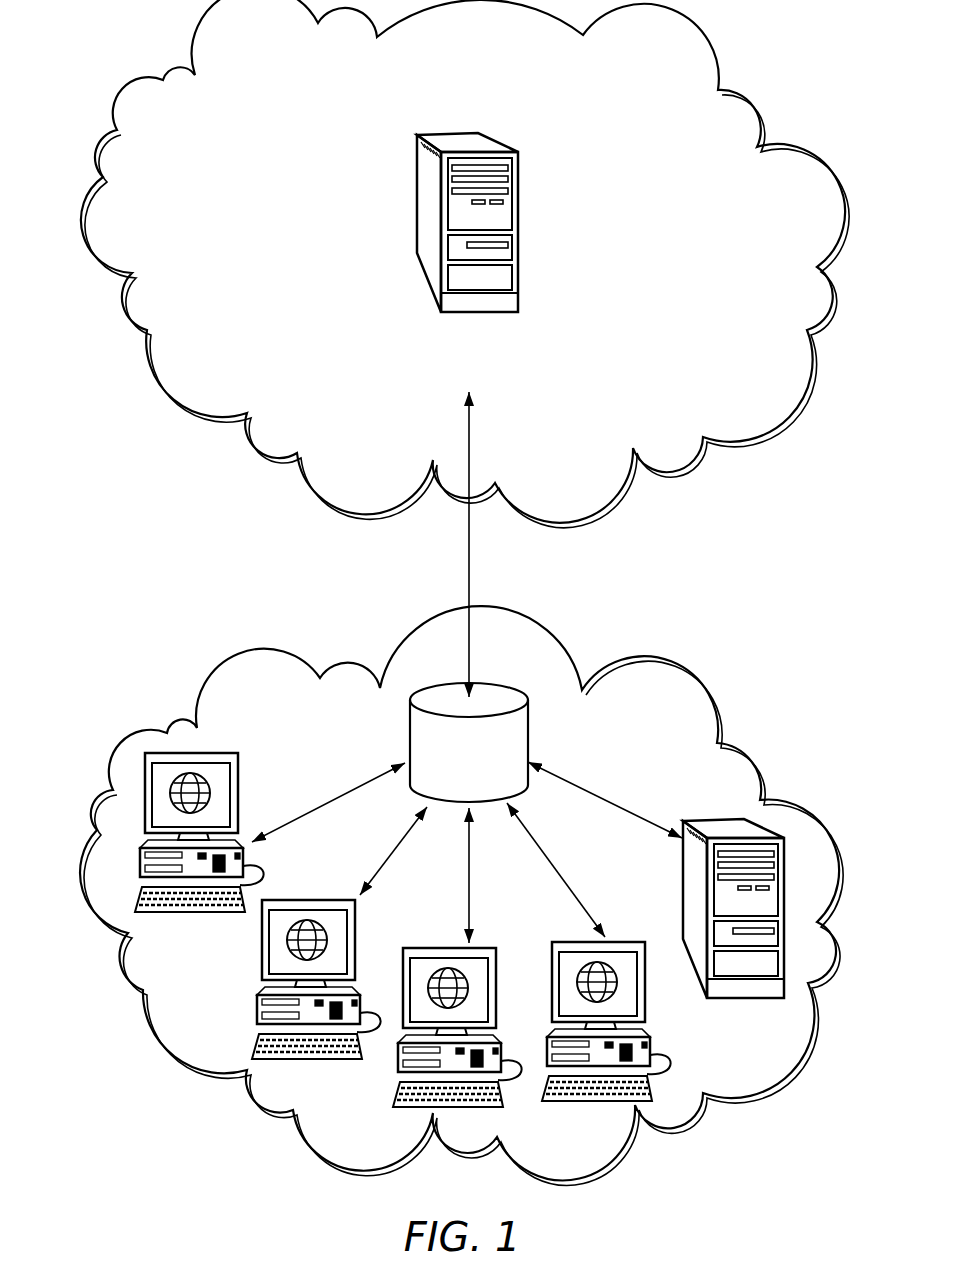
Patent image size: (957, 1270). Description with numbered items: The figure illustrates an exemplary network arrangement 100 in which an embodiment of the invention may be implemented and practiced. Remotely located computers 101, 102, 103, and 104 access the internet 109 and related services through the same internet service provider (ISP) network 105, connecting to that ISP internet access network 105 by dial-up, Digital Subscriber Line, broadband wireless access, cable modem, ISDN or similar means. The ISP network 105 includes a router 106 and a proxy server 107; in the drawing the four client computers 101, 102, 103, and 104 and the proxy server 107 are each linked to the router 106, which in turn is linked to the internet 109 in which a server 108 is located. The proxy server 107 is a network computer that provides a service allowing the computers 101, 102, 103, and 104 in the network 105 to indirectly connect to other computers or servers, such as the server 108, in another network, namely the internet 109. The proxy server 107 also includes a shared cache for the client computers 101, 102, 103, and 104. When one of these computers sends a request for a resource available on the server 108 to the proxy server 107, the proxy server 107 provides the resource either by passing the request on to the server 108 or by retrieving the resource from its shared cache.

The network arrangement 100 is at (772, 65).
The computer 101 is at (239, 786).
The computer 102 is at (261, 954).
The computer 103 is at (399, 1062).
The computer 104 is at (648, 1026).
The ISP network 105 is at (288, 754).
The router 106 is at (448, 779).
The proxy server 107 is at (681, 883).
The server 108 is at (519, 218).
The internet 109 is at (275, 260).